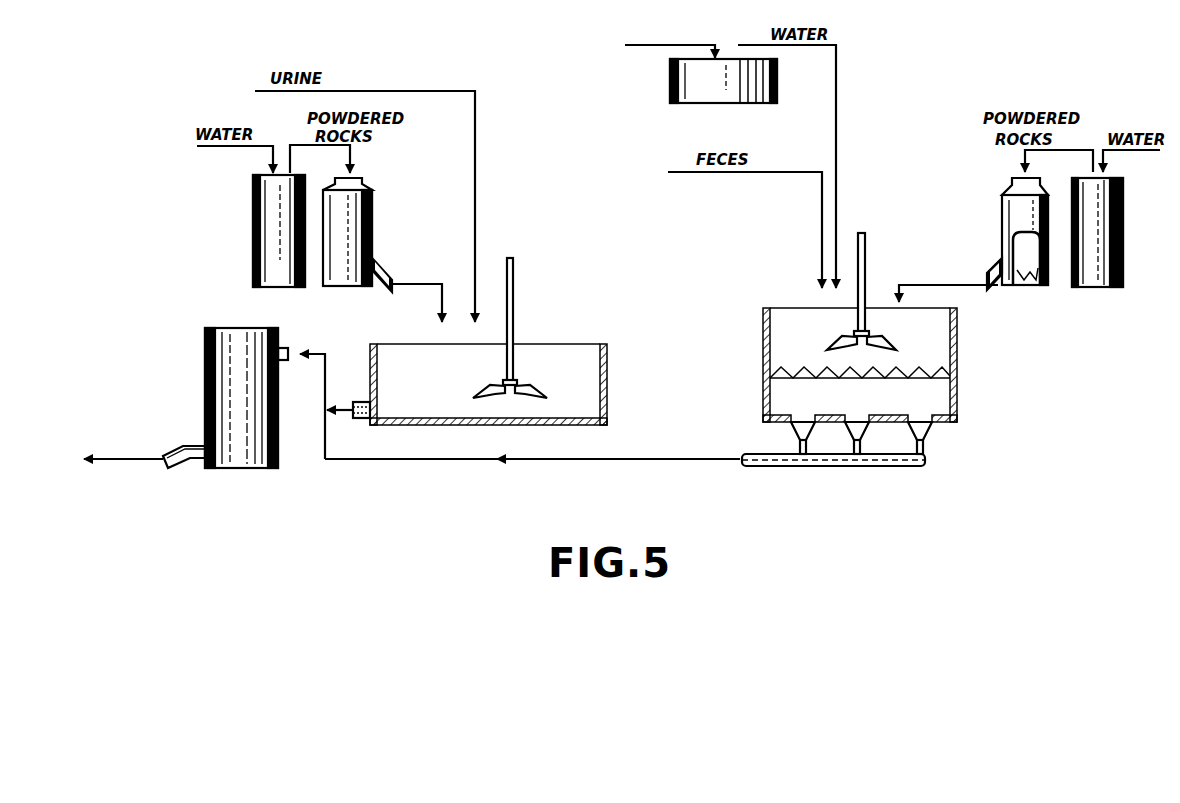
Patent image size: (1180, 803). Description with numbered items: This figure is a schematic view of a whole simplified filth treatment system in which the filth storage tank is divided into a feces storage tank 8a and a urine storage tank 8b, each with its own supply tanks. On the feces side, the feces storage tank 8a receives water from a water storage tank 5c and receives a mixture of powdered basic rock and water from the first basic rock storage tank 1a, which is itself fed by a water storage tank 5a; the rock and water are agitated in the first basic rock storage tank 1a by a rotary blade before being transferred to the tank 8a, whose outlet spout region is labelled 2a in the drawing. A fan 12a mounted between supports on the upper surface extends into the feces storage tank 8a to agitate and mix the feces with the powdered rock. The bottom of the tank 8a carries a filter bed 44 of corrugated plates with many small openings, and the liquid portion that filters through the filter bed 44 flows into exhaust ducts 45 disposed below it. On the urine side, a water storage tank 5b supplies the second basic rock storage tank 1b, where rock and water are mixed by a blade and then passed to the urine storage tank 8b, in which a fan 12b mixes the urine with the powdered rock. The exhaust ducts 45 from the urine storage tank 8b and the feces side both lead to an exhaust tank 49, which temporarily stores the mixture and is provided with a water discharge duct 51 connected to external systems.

The water storage tank 5b is at (258, 240).
The second basic rock storage tank 1b is at (376, 243).
The urine storage tank 8b is at (572, 354).
The fan 12b is at (515, 283).
The exhaust tank 49 is at (218, 362).
The water discharge duct 51 is at (188, 464).
The water storage tank 5c is at (670, 80).
The feces storage tank 8a is at (955, 342).
The filter bed 44 is at (934, 374).
The fan 12a is at (868, 263).
The exhaust duct 45 is at (905, 467).
The first basic rock storage tank 1a is at (1038, 288).
The dispensing cup 2a is at (1016, 288).
The water storage tank 5a is at (1124, 244).